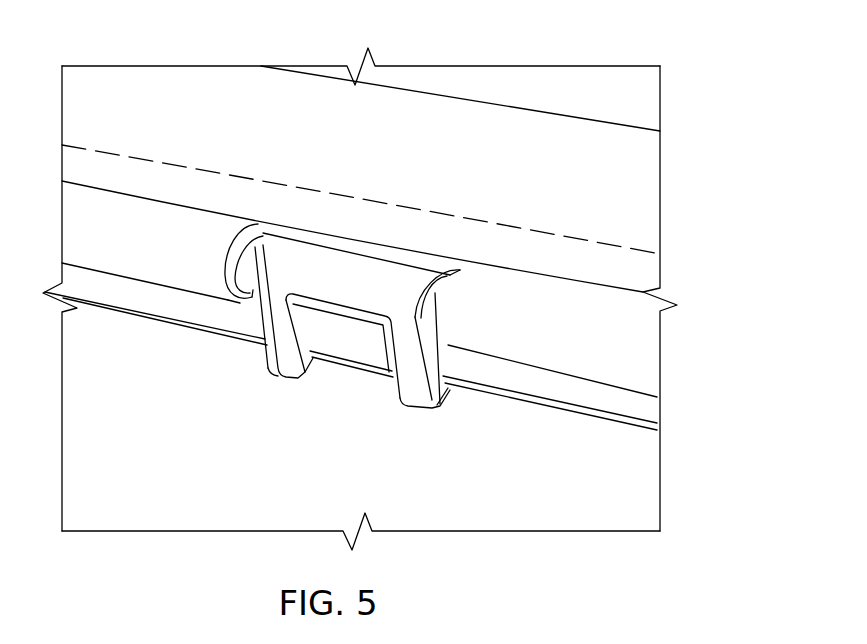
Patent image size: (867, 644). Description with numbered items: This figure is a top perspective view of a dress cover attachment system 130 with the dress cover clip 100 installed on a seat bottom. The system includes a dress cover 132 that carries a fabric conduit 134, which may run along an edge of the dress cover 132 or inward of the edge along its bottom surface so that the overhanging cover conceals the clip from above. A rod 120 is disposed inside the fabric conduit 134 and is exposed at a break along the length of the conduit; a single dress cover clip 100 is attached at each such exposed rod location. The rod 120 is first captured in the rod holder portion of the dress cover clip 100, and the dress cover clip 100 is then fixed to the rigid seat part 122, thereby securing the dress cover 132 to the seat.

The dress cover clip 100 is at (343, 283).
The rod 120 is at (227, 307).
The rigid seat part 122 is at (627, 480).
The dress cover attachment system 130 is at (675, 104).
The dress cover 132 is at (637, 207).
The fabric conduit 134 is at (627, 362).